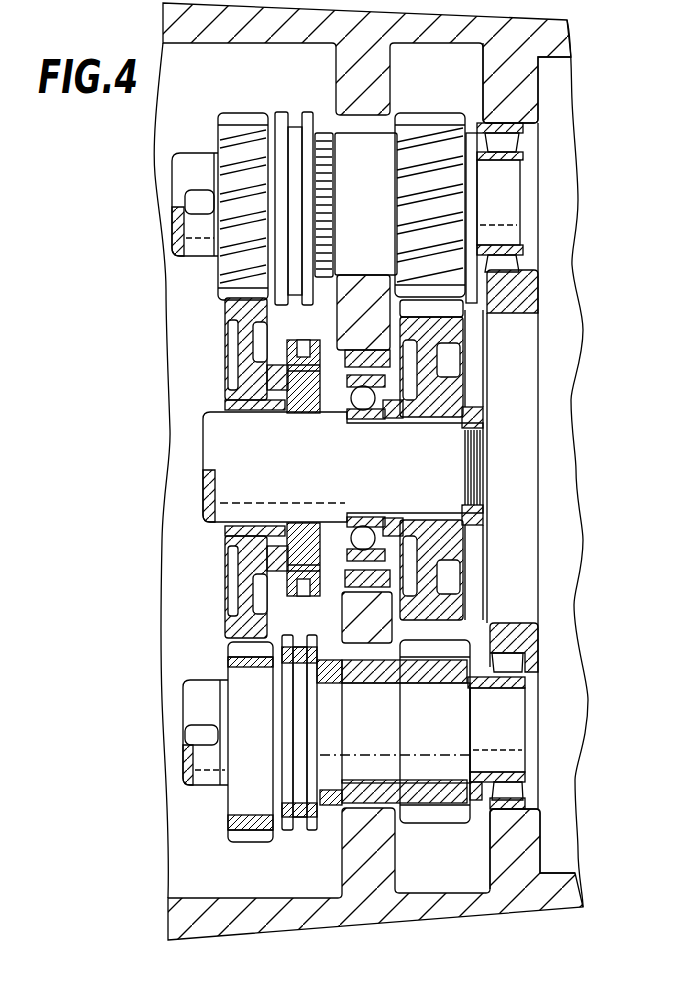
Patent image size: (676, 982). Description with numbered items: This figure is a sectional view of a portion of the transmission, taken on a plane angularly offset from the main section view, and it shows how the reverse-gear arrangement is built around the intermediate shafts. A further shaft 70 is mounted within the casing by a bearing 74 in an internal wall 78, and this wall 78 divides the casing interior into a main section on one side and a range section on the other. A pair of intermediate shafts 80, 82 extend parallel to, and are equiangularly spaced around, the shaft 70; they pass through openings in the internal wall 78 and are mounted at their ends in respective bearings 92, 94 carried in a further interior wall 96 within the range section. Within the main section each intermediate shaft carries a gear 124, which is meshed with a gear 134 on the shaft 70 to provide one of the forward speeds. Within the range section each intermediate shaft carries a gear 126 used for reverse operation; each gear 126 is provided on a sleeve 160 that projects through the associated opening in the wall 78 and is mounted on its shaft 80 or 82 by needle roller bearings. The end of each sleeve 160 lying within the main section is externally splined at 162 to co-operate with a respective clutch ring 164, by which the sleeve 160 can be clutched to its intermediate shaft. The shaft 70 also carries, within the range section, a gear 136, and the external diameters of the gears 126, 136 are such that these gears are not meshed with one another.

The shaft 70 is at (270, 483).
The bearing 74 is at (360, 408).
The internal wall 78 is at (373, 93).
The intermediate shaft 80 is at (190, 158).
The intermediate shaft 82 is at (198, 687).
The bearing 92 is at (517, 141).
The bearing 94 is at (523, 785).
The interior wall 96 is at (523, 103).
The gear 124 is at (244, 123).
The gear 126 is at (438, 117).
The gear 134 is at (247, 582).
The gear 136 is at (432, 373).
The sleeve 160 is at (380, 226).
The externally splined portion 162 is at (323, 133).
The clutch ring 164 is at (293, 127).